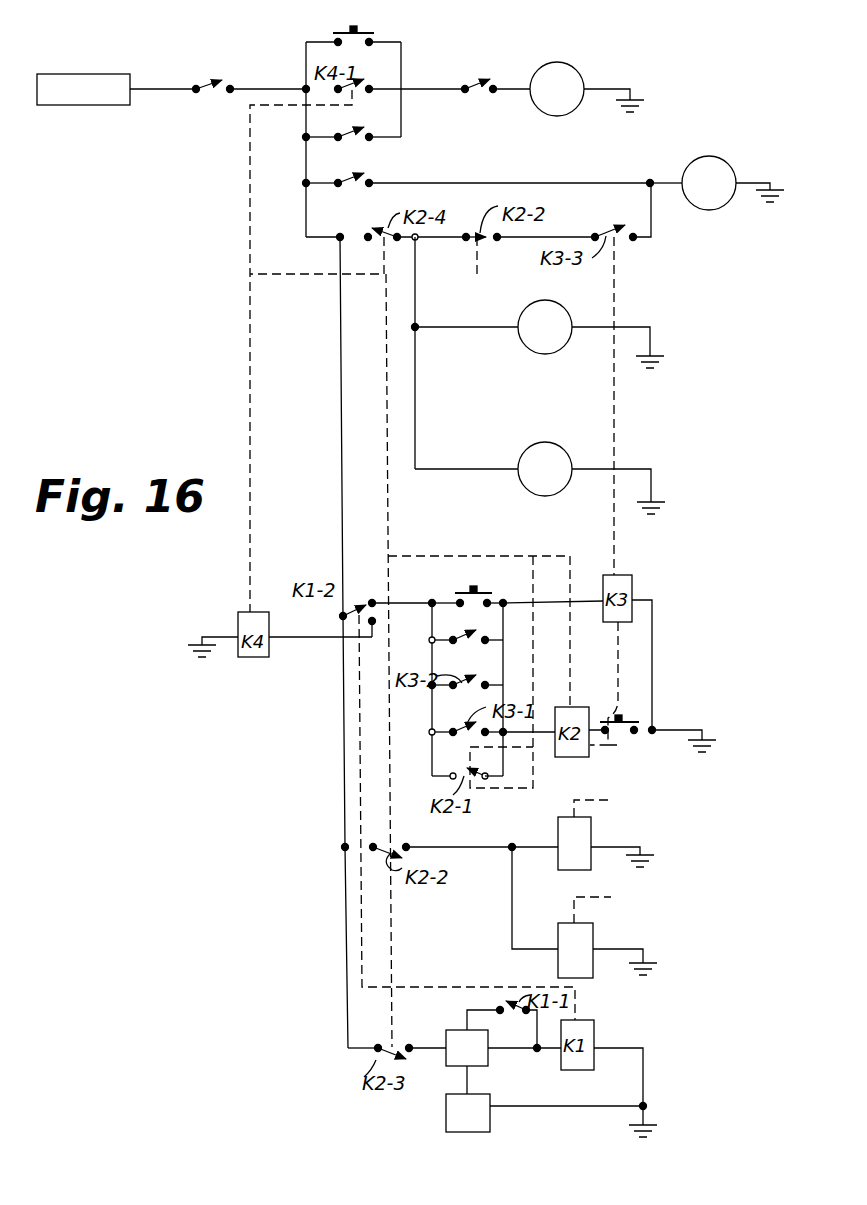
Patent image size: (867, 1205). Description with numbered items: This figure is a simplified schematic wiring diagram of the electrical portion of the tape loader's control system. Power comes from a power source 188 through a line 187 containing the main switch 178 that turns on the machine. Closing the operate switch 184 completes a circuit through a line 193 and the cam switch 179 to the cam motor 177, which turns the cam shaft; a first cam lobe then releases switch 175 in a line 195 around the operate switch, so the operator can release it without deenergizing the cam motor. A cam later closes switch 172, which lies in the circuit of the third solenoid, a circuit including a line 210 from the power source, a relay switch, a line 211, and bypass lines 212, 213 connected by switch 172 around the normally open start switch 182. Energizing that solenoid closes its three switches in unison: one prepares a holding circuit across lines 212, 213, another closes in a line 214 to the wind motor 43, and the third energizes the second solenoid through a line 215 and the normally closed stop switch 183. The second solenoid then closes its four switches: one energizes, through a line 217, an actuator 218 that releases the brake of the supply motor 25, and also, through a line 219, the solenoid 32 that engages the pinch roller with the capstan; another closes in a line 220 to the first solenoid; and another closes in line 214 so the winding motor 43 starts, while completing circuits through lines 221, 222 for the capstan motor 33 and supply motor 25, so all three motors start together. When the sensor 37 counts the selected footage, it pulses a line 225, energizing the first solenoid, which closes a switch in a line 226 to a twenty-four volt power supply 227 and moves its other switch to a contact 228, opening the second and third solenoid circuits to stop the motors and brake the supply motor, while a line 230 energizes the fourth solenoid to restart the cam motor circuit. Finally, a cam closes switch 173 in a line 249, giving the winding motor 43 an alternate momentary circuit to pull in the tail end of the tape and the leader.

The power source 188 is at (112, 80).
The main switch 178 is at (212, 76).
The line 187 is at (284, 70).
The operate switch 184 is at (365, 28).
The line 193 is at (401, 45).
The cam switch 179 is at (492, 72).
The cam motor 177 is at (575, 68).
The switch 175 is at (352, 118).
The line 195 is at (401, 128).
The switch 173 is at (352, 178).
The line 249 is at (399, 183).
The winding motor 43 is at (728, 163).
The line 214 is at (553, 233).
The line 221 is at (417, 300).
The line 222 is at (440, 330).
The capstan motor 33 is at (590, 303).
The supply motor 25 is at (568, 425).
The line 210 is at (342, 458).
The line 211 is at (396, 603).
The start switch 182 is at (480, 590).
The bypass line 212 is at (432, 626).
The bypass line 213 is at (505, 612).
The cam switch 172 is at (466, 641).
The line 215 is at (525, 732).
The stop switch 183 is at (622, 716).
The contact 228 is at (372, 622).
The line 230 is at (290, 637).
The line 217 is at (438, 847).
The actuator 218 is at (588, 835).
The line 219 is at (512, 915).
The solenoid actuator 32 is at (588, 942).
The line 226 is at (466, 1020).
The twenty-four volt power supply 227 is at (480, 1054).
The line 225 is at (555, 1106).
The line 220 is at (428, 1052).
The sensor 37 is at (452, 1126).